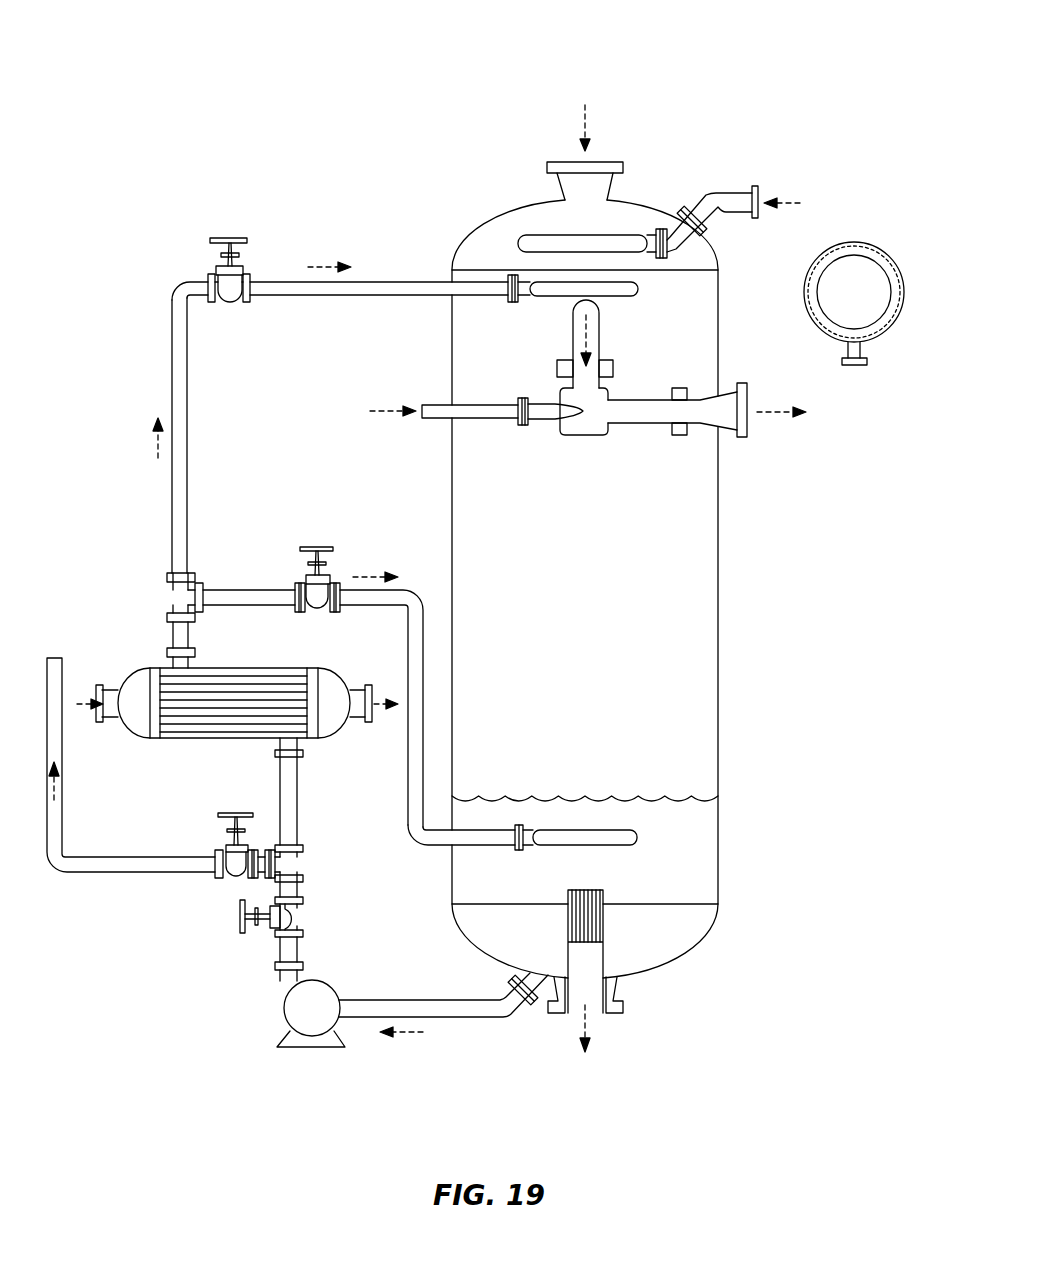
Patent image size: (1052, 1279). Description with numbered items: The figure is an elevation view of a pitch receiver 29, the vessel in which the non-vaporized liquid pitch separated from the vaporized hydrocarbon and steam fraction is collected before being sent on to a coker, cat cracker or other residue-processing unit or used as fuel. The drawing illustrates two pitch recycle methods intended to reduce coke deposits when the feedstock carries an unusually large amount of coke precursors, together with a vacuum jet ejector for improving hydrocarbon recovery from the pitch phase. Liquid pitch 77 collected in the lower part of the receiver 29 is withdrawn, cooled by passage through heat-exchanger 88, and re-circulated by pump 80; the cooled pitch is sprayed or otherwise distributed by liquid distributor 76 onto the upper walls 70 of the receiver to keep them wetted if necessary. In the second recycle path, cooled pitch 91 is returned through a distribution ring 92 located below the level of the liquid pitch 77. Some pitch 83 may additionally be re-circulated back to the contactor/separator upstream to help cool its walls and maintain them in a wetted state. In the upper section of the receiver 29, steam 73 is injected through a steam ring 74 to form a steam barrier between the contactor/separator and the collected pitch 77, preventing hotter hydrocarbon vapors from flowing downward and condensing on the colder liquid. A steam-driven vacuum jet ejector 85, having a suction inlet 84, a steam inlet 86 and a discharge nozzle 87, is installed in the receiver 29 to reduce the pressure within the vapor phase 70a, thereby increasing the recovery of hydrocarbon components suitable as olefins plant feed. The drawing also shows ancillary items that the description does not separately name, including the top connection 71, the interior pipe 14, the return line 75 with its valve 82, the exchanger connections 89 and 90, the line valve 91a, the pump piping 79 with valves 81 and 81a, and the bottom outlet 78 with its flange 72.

The pitch receiver 29 is at (201, 66).
The upper walls 70 is at (722, 290).
The vapor phase 70a is at (556, 572).
The top inlet nozzle 71 is at (612, 162).
The steam 73 is at (758, 192).
The inlet pipe 14 is at (527, 233).
The steam ring 74 is at (881, 340).
The return pipe 75 is at (300, 298).
The liquid distributor 76 is at (646, 292).
The valve 82 is at (228, 237).
The suction inlet 84 is at (600, 333).
The vacuum jet ejector 85 is at (636, 413).
The steam inlet 86 is at (435, 419).
The discharge nozzle 87 is at (746, 440).
The liquid pitch 77 is at (548, 796).
The distribution ring 92 is at (617, 828).
The bottom outlet 78 is at (598, 889).
The bottom flange 72 is at (624, 1006).
The pump discharge pipe 79 is at (398, 1000).
The pump 80 is at (327, 982).
The valve 81 is at (238, 931).
The valve 81a is at (227, 812).
The pitch 83 is at (55, 657).
The heat-exchanger 88 is at (222, 668).
The heat exchanger inlet 89 is at (100, 685).
The heat exchanger outlet 90 is at (368, 684).
The cooled pitch 91 is at (222, 589).
The valve 91a is at (318, 546).